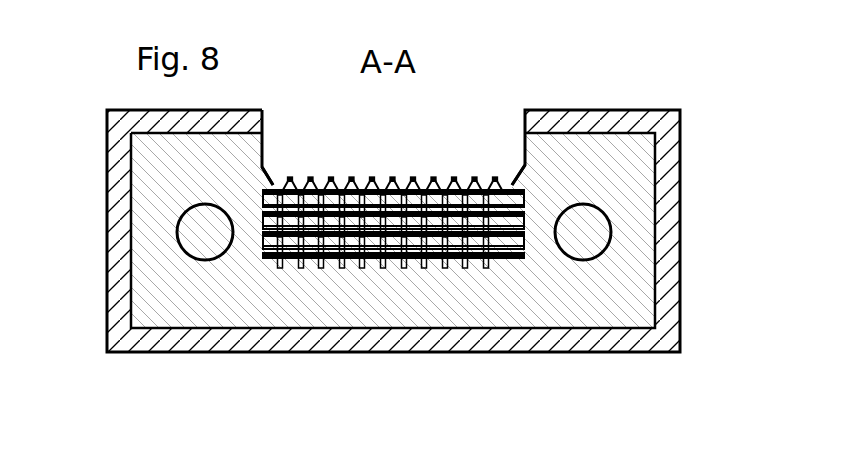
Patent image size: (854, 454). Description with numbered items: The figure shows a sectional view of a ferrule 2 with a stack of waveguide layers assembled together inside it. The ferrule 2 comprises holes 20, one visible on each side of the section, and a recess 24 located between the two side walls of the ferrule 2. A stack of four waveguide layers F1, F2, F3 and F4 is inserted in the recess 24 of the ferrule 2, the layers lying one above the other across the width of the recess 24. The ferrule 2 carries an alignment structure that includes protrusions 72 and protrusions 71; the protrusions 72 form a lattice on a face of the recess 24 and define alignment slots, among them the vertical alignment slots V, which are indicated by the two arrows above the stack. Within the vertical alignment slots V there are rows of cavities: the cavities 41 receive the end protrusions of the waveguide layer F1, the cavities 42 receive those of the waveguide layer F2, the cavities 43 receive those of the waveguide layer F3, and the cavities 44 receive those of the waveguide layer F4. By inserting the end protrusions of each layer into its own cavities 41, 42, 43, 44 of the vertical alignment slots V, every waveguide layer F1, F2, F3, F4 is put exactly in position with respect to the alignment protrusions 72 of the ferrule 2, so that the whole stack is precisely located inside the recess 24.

The ferrule 2 is at (628, 118).
The holes 20 is at (207, 232).
The recess 24 is at (509, 143).
The cavities 41 is at (449, 268).
The cavities 42 is at (385, 268).
The cavities 43 is at (318, 268).
The cavities 44 is at (263, 222).
The protrusions 71 is at (352, 177).
The alignment protrusions 72 is at (380, 238).
The waveguide layer F1 is at (527, 260).
The waveguide layer F2 is at (523, 237).
The waveguide layer F3 is at (524, 216).
The waveguide layer F4 is at (524, 196).
The vertical alignment slots V is at (464, 168).